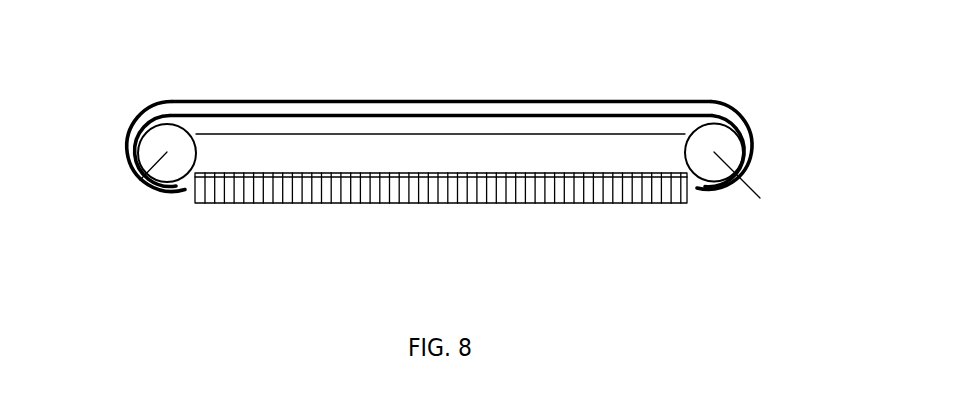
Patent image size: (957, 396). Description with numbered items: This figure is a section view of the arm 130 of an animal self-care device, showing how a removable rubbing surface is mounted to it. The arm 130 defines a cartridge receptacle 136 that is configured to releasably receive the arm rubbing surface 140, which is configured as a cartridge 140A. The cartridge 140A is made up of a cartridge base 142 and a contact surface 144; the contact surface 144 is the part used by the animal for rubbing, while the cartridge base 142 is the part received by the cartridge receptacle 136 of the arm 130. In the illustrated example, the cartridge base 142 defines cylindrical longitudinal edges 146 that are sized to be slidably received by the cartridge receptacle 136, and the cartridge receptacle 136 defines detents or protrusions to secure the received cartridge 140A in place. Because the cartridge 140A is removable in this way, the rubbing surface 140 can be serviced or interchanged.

The arm 130 is at (457, 101).
The cartridge receptacle 136 is at (128, 156).
The cylindrical longitudinal edges 146 is at (140, 180).
The arm rubbing surface 140 is at (432, 220).
The cartridge 140A is at (276, 214).
The cartridge base 142 is at (445, 158).
The contact surface 144 is at (562, 203).